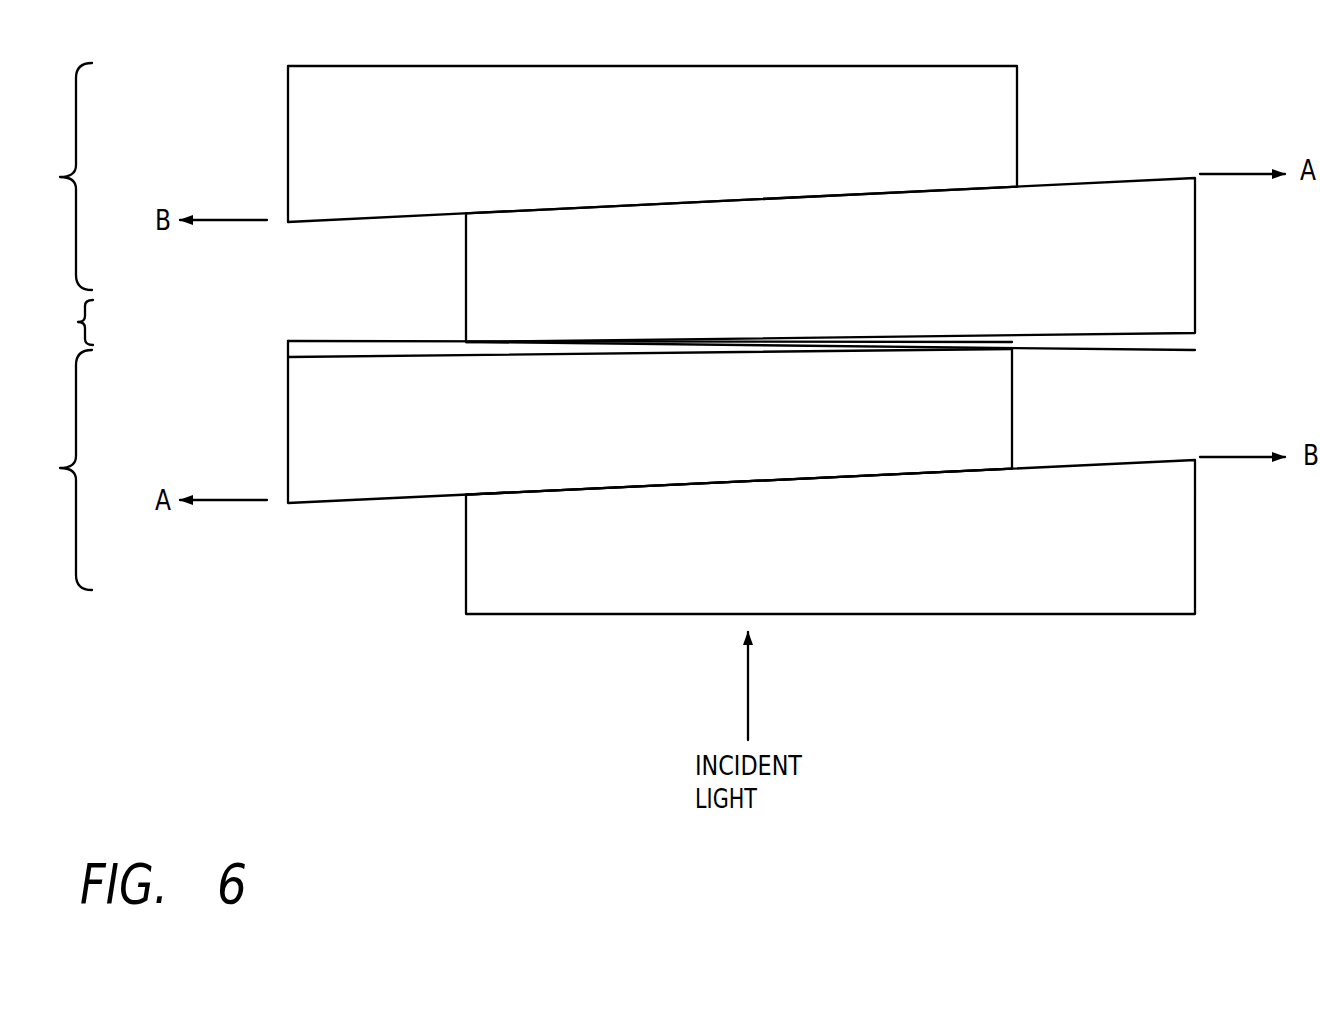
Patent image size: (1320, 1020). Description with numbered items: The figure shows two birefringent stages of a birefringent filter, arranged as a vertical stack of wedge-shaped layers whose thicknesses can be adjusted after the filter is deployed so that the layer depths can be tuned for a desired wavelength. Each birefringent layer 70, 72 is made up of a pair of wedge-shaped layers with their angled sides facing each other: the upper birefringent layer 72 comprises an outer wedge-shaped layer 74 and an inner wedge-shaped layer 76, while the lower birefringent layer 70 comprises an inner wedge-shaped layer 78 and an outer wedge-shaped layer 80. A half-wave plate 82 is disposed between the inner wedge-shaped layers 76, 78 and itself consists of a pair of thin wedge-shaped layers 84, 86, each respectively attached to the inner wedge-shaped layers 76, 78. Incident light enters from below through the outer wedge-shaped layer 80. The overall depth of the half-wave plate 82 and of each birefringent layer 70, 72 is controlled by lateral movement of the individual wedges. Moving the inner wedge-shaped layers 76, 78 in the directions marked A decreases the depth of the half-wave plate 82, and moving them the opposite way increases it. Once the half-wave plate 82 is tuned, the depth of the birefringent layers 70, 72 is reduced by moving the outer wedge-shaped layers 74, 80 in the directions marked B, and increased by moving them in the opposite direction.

The birefringent layer 70 is at (52, 470).
The birefringent layer 72 is at (52, 176).
The outer wedge-shaped layer 74 is at (1007, 98).
The inner wedge-shaped layer 76 is at (1165, 263).
The inner wedge-shaped layer 78 is at (305, 418).
The outer wedge-shaped layer 80 is at (480, 565).
The half-wave plate 82 is at (66, 322).
The wedge-shaped layer 84 is at (1197, 336).
The wedge-shaped layer 86 is at (290, 343).